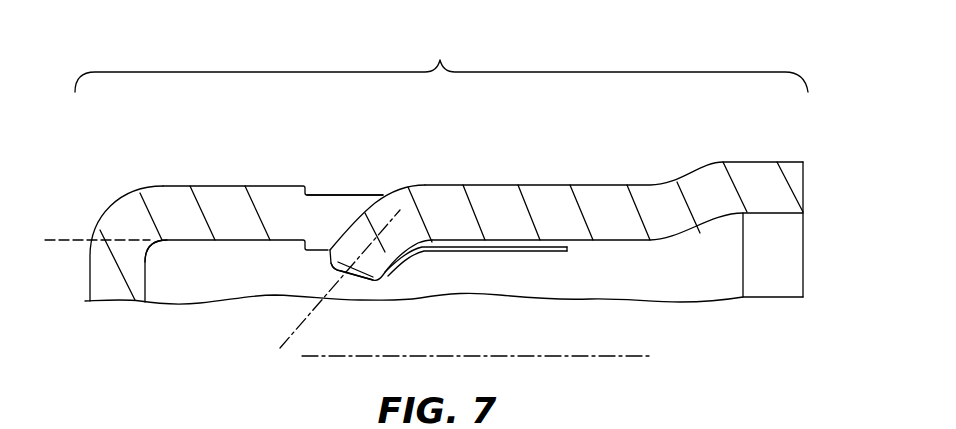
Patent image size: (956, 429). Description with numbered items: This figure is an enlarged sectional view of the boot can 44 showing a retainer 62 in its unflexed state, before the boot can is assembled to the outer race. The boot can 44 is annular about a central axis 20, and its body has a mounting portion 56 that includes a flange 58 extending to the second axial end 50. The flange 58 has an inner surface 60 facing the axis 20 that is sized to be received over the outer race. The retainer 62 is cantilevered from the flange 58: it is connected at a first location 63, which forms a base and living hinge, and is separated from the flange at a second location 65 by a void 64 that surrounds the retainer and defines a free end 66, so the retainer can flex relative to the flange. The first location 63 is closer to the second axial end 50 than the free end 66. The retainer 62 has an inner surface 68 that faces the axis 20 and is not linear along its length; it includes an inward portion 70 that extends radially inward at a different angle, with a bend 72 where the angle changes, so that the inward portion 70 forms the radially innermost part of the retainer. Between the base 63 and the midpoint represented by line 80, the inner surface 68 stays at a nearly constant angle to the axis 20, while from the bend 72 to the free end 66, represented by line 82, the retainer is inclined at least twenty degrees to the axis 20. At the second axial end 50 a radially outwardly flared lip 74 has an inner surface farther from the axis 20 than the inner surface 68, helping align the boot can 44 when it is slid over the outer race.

The axis 20 is at (590, 357).
The boot can 44 is at (140, 178).
The second axial end 50 is at (803, 247).
The mounting portion 56 is at (441, 64).
The flange 58 is at (210, 195).
The inner surface 60 is at (252, 243).
The retainer 62 is at (653, 147).
The first location 63 is at (565, 249).
The void 64 is at (332, 205).
The second location 65 is at (370, 297).
The free end 66 is at (357, 292).
The inner surface 68 is at (637, 242).
The inward portion 70 is at (375, 262).
The bend 72 is at (418, 247).
The flared lip 74 is at (780, 267).
The line 80 is at (57, 245).
The line 82 is at (307, 318).